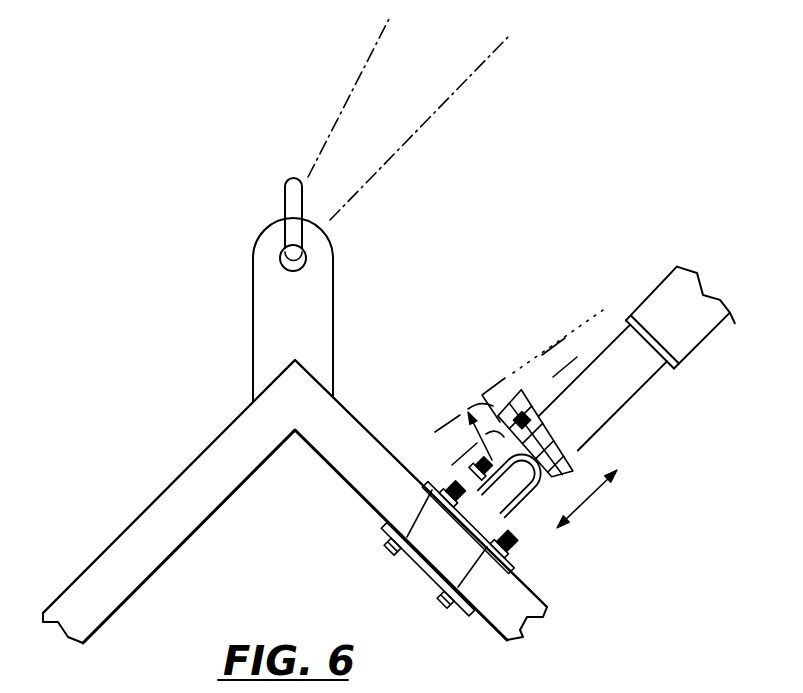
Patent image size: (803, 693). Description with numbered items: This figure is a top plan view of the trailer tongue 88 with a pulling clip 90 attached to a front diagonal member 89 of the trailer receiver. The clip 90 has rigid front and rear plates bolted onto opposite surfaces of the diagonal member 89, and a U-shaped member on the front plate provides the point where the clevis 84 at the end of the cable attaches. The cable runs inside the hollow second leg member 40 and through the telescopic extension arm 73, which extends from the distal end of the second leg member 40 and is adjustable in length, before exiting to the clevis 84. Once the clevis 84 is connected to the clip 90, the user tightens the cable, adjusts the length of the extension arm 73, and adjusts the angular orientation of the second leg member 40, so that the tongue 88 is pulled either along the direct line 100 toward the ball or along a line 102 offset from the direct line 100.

The direct line 100 is at (355, 86).
The offset line 102 is at (457, 97).
The tongue 88 is at (268, 278).
The diagonal member 89 is at (375, 504).
The clip 90 is at (442, 455).
The clevis 84 is at (535, 495).
The extension arm 73 is at (603, 402).
The second leg member 40 is at (675, 328).